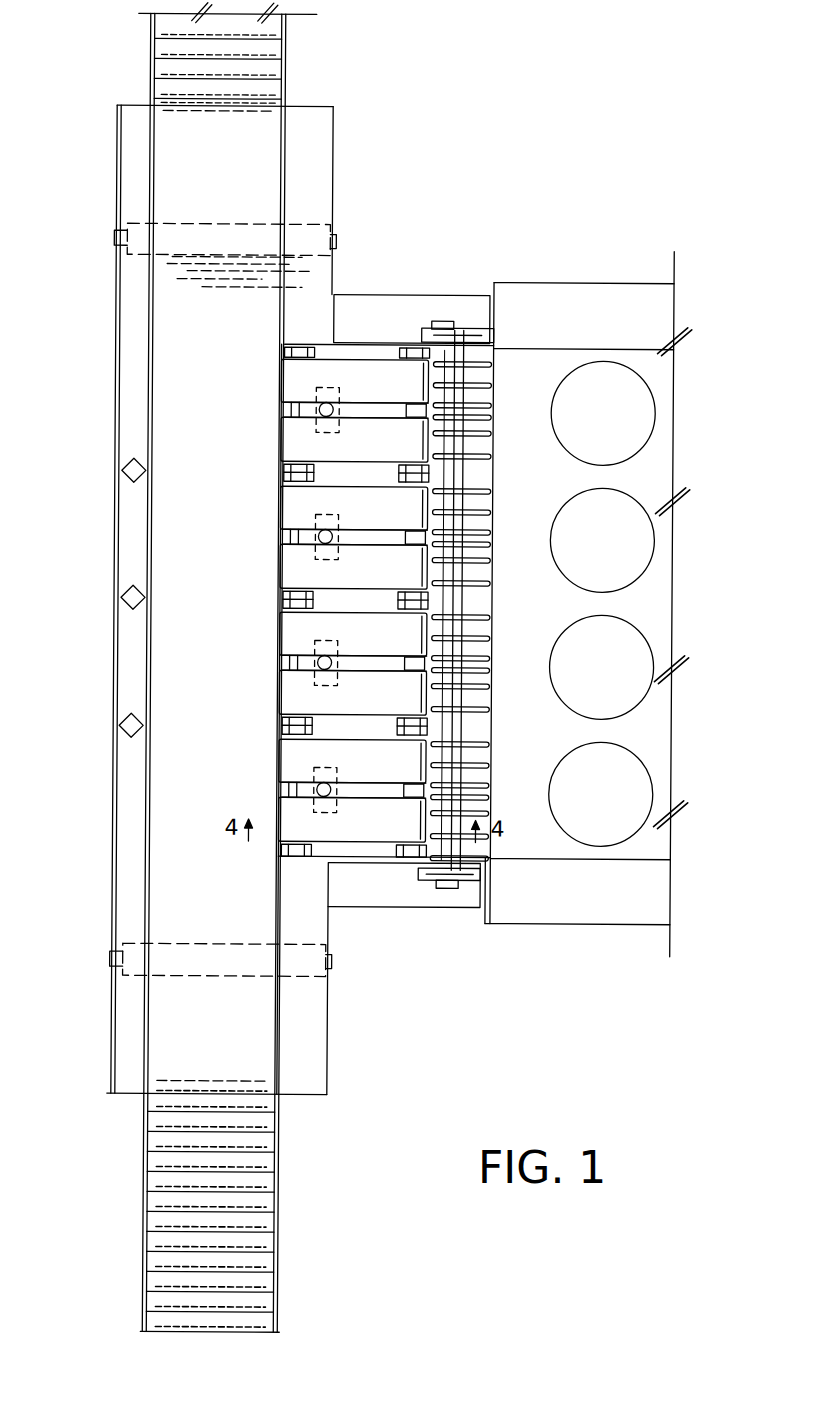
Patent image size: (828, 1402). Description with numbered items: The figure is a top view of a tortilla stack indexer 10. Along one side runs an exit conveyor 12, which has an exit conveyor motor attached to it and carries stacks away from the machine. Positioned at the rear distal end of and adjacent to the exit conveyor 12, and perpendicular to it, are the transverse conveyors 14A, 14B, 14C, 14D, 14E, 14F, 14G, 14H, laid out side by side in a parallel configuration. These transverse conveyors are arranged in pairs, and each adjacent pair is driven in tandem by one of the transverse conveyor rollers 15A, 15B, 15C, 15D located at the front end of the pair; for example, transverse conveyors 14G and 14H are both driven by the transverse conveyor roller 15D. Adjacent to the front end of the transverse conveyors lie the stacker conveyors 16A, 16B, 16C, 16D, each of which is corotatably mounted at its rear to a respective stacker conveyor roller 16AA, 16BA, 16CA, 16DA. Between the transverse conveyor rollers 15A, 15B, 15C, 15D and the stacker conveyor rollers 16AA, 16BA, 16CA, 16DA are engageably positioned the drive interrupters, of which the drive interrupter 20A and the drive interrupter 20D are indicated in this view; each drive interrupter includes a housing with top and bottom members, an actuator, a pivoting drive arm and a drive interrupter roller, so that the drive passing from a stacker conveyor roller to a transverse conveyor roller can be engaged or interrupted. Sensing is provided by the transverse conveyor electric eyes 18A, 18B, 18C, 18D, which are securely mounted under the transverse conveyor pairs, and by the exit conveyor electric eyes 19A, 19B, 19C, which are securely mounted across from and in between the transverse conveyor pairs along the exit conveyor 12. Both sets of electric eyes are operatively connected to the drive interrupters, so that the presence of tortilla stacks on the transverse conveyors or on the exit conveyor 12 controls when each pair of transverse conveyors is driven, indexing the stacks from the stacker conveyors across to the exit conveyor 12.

The tortilla stack indexer 10 is at (408, 56).
The exit conveyor 12 is at (272, 76).
The transverse conveyor 14A is at (350, 393).
The transverse conveyor 14B is at (350, 453).
The transverse conveyor 14C is at (350, 520).
The transverse conveyor 14D is at (350, 580).
The transverse conveyor 14E is at (350, 646).
The transverse conveyor 14F is at (350, 706).
The transverse conveyor 14G is at (350, 773).
The transverse conveyor 14H is at (350, 833).
The transverse conveyor roller 15A is at (417, 408).
The transverse conveyor roller 15B is at (415, 540).
The transverse conveyor roller 15C is at (415, 665).
The transverse conveyor roller 15D is at (420, 796).
The stacker conveyor 16A is at (480, 392).
The stacker conveyor roller 16AA is at (465, 418).
The stacker conveyor 16B is at (480, 496).
The stacker conveyor roller 16BA is at (460, 540).
The stacker conveyor 16C is at (480, 619).
The stacker conveyor roller 16CA is at (460, 667).
The stacker conveyor 16D is at (480, 744).
The stacker conveyor roller 16DA is at (452, 878).
The transverse conveyor electric eye 18A is at (310, 408).
The transverse conveyor electric eye 18B is at (310, 540).
The transverse conveyor electric eye 18C is at (310, 667).
The transverse conveyor electric eye 18D is at (310, 791).
The exit conveyor electric eye 19A is at (130, 480).
The exit conveyor electric eye 19B is at (128, 600).
The exit conveyor electric eye 19C is at (126, 733).
The drive interrupter 20A is at (440, 387).
The drive interrupter 20D is at (488, 793).